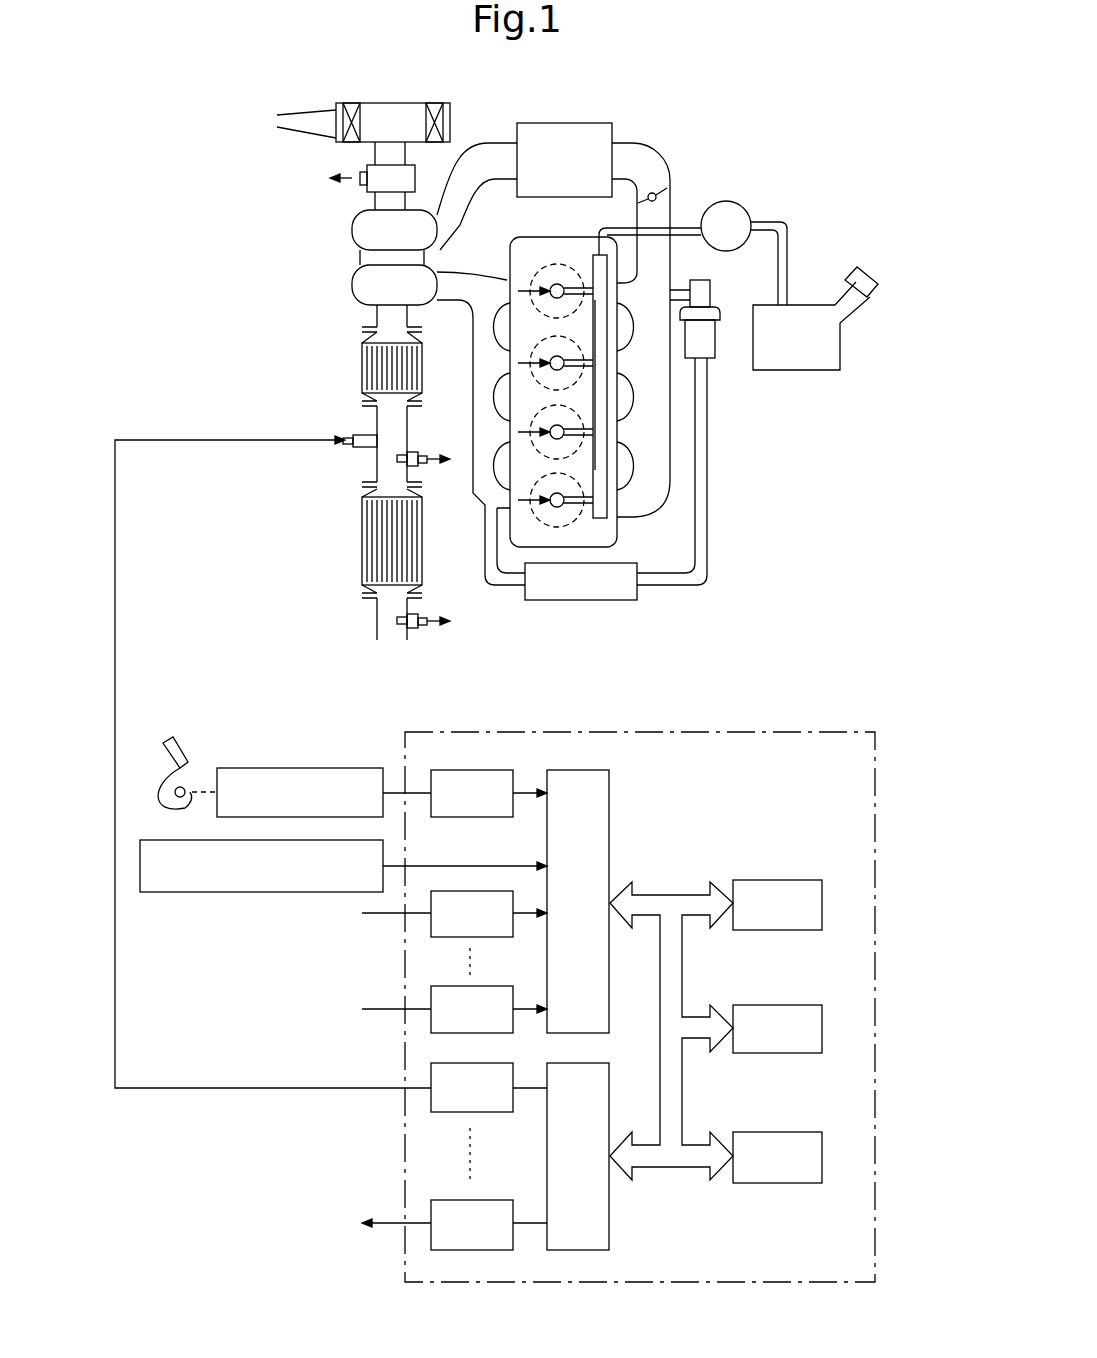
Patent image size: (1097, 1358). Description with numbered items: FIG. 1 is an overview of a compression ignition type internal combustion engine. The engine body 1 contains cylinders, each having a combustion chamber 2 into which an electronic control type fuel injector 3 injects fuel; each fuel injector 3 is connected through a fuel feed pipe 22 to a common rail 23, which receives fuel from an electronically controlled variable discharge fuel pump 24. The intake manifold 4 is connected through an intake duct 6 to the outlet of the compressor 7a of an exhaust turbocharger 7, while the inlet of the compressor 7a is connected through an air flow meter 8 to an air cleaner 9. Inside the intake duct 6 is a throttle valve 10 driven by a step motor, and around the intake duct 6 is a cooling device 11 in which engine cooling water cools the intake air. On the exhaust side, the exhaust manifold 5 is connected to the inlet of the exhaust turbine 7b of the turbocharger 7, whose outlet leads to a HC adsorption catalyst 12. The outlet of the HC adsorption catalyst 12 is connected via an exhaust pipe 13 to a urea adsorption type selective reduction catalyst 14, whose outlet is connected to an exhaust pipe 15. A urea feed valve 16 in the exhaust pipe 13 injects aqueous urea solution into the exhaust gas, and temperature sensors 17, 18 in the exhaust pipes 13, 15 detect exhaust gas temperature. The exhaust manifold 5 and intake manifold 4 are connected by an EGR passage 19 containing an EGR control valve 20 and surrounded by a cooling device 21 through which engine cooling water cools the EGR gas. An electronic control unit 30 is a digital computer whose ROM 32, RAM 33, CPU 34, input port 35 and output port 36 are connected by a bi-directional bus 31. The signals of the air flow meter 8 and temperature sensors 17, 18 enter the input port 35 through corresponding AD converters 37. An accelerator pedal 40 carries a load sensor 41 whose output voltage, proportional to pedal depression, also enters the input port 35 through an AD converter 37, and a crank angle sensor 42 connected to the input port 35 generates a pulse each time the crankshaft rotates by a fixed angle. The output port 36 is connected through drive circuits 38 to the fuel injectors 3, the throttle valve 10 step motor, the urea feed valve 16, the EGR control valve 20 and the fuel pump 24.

The engine body 1 is at (634, 548).
The combustion chamber 2 is at (537, 276).
The fuel injector 3 is at (556, 283).
The intake manifold 4 is at (655, 485).
The exhaust manifold 5 is at (475, 363).
The intake duct 6 is at (655, 162).
The exhaust turbocharger 7 is at (340, 253).
The compressor 7a is at (357, 228).
The exhaust turbine 7b is at (357, 283).
The air flow meter 8 is at (367, 172).
The air cleaner 9 is at (400, 117).
The throttle valve 10 is at (670, 185).
The cooling device 11 is at (585, 135).
The HC adsorption catalyst 12 is at (368, 370).
The exhaust pipe 13 is at (396, 432).
The selective reduction catalyst 14 is at (370, 535).
The exhaust pipe 15 is at (378, 620).
The urea feed valve 16 is at (363, 447).
The temperature sensor 17 is at (415, 468).
The temperature sensor 18 is at (420, 628).
The EGR passage 19 is at (708, 548).
The EGR control valve 20 is at (706, 300).
The cooling device 21 is at (590, 600).
The fuel feed pipe 22 is at (590, 268).
The common rail 23 is at (607, 433).
The fuel pump 24 is at (745, 208).
The electronic control unit 30 is at (882, 757).
The bi-directional bus 31 is at (672, 895).
The ROM 32 is at (795, 880).
The RAM 33 is at (795, 1005).
The CPU 34 is at (795, 1132).
The input port 35 is at (578, 770).
The output port 36 is at (612, 1242).
The AD converter 37 is at (468, 770).
The drive circuit 38 is at (431, 1210).
The accelerator pedal 40 is at (182, 750).
The load sensor 41 is at (336, 768).
The crank angle sensor 42 is at (243, 892).